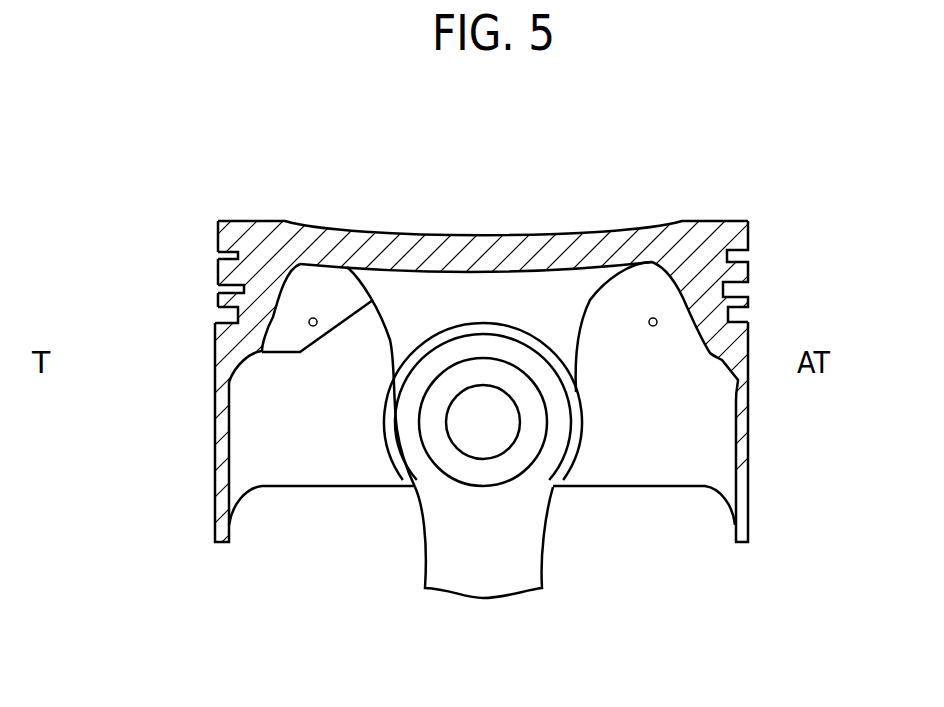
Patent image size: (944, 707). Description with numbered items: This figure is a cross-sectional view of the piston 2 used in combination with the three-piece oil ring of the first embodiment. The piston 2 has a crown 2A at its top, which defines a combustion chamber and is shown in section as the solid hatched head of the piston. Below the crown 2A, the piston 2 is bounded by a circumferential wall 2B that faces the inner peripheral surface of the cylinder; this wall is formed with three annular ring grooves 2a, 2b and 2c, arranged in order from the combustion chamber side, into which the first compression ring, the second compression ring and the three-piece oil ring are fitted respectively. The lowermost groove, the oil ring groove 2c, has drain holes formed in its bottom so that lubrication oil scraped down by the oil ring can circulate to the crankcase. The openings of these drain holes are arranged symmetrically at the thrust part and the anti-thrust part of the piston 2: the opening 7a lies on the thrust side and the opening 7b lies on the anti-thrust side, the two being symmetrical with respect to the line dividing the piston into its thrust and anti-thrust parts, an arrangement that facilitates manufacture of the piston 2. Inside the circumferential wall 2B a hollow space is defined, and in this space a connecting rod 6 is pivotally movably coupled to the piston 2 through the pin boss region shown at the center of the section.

The piston 2 is at (812, 275).
The crown 2A is at (520, 252).
The ring groove 2a is at (218, 257).
The ring groove 2b is at (220, 286).
The oil ring groove 2c is at (218, 317).
The circumferential wall 2B is at (217, 482).
The opening 7a is at (314, 318).
The opening 7b is at (656, 318).
The connecting rod 6 is at (517, 577).